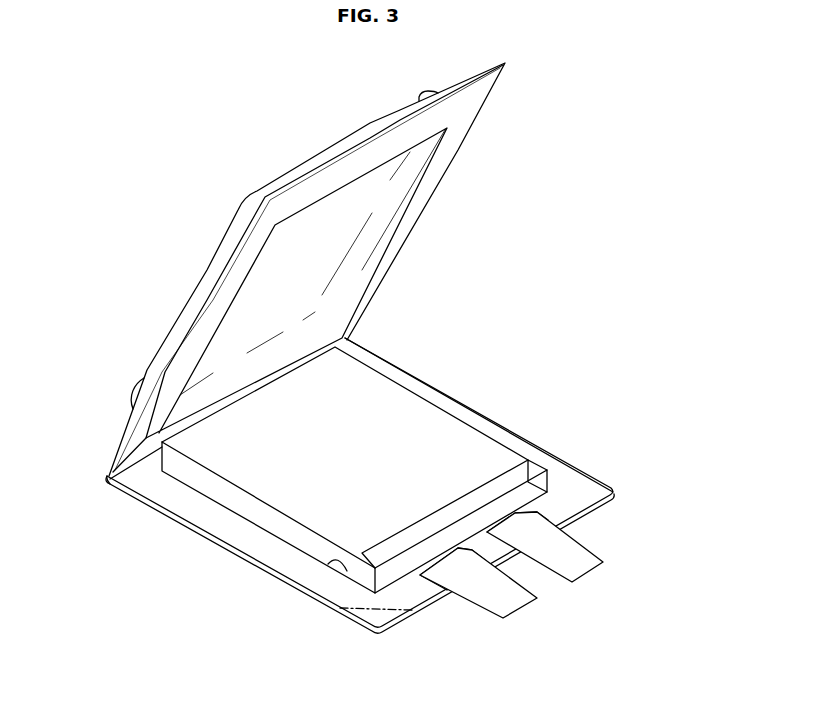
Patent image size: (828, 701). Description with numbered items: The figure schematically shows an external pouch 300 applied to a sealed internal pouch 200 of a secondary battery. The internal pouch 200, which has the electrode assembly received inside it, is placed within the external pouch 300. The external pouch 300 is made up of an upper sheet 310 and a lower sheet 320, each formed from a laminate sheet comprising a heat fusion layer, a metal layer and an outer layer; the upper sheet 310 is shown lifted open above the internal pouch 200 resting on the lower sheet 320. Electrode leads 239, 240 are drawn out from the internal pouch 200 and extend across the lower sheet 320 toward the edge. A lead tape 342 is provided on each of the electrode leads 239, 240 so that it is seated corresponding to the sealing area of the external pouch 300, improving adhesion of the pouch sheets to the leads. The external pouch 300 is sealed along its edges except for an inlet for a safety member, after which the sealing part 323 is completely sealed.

The external pouch 300 is at (157, 283).
The upper sheet 310 is at (478, 104).
The lower sheet 320 is at (327, 563).
The sealing part 323 is at (238, 535).
The internal pouch 200 is at (424, 382).
The lead tape 342 is at (545, 520).
The electrode lead 239 is at (517, 603).
The electrode lead 240 is at (577, 569).